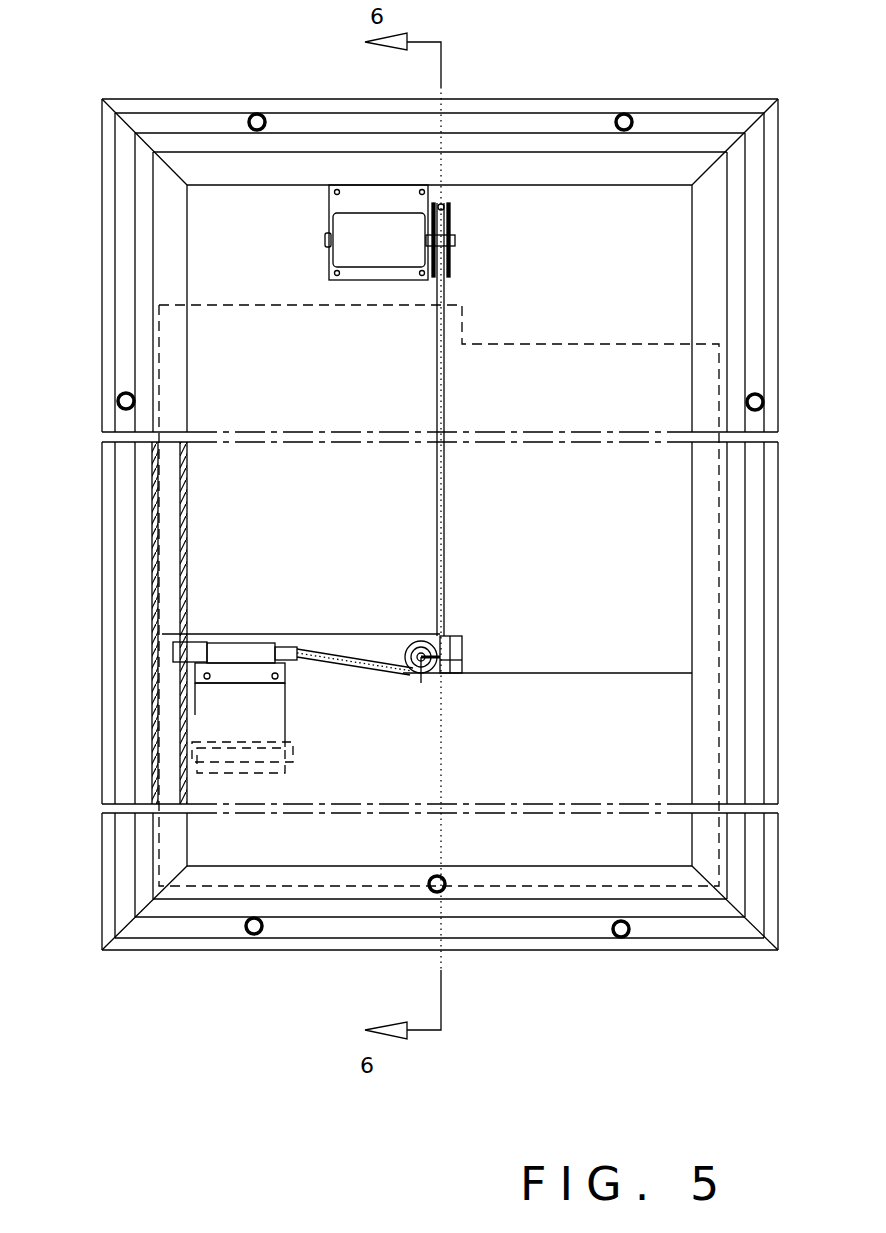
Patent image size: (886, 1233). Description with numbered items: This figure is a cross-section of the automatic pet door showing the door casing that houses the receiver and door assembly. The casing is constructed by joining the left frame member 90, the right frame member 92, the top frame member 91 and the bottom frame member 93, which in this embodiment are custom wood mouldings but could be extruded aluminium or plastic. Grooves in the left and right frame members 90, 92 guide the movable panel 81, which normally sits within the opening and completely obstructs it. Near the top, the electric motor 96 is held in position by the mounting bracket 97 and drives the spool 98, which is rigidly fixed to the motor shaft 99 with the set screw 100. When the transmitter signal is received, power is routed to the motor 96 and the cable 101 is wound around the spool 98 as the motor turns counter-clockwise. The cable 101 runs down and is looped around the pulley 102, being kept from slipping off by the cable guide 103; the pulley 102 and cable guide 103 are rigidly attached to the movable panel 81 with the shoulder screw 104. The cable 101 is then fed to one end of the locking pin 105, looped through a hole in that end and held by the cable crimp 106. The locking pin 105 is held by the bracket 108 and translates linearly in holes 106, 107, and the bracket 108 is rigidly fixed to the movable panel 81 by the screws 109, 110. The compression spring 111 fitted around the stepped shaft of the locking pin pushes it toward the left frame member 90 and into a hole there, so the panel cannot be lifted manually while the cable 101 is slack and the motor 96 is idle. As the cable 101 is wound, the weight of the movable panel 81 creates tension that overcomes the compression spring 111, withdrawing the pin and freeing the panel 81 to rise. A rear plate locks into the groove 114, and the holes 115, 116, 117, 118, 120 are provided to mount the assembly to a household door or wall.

The movable panel 81 is at (640, 632).
The left frame member 90 is at (190, 339).
The top frame member 91 is at (300, 100).
The right frame member 92 is at (696, 776).
The bottom frame member 93 is at (520, 866).
The electric motor 96 is at (343, 250).
The mounting bracket 97 is at (369, 278).
The spool 98 is at (452, 265).
The motor shaft 99 is at (458, 240).
The set screw 100 is at (441, 200).
The cable 101 is at (441, 370).
The pulley 102 is at (418, 641).
The cable guide 103 is at (462, 673).
The shoulder screw 104 is at (517, 652).
The locking pin 105 is at (244, 648).
The cable crimp 106 is at (183, 643).
The hole 107 is at (285, 663).
The bracket 108 is at (250, 683).
The screw 109 is at (287, 683).
The screw 110 is at (178, 660).
The compression spring 111 is at (230, 695).
The groove 114 is at (257, 112).
The hole 115 is at (611, 936).
The hole 116 is at (246, 934).
The hole 117 is at (747, 400).
The hole 118 is at (132, 410).
The hole 120 is at (632, 112).